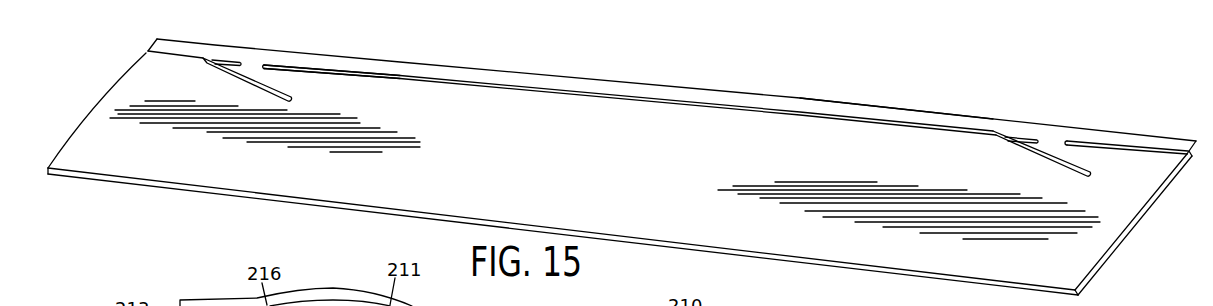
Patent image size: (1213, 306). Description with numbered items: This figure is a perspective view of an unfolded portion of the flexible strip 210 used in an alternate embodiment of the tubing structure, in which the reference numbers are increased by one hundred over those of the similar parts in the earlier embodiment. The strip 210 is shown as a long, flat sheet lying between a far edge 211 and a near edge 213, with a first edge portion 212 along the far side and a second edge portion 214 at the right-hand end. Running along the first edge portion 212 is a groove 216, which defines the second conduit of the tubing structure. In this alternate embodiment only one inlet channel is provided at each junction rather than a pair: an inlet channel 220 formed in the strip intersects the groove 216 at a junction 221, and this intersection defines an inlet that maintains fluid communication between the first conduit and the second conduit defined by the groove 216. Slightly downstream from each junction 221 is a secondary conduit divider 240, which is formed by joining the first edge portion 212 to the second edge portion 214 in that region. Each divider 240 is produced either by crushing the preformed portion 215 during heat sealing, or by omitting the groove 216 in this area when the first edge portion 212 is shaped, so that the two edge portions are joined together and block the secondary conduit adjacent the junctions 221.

The flexible strip 210 is at (690, 86).
The far edge flange 211 is at (547, 78).
The first edge portion 212 is at (907, 133).
The near edge 213 is at (937, 277).
The second edge portion 214 is at (1090, 260).
The preformed portion 215 is at (1189, 158).
The groove 216 is at (782, 113).
The inlet channel 220 is at (240, 77).
The junction 221 is at (208, 60).
The secondary conduit divider 240 is at (257, 63).